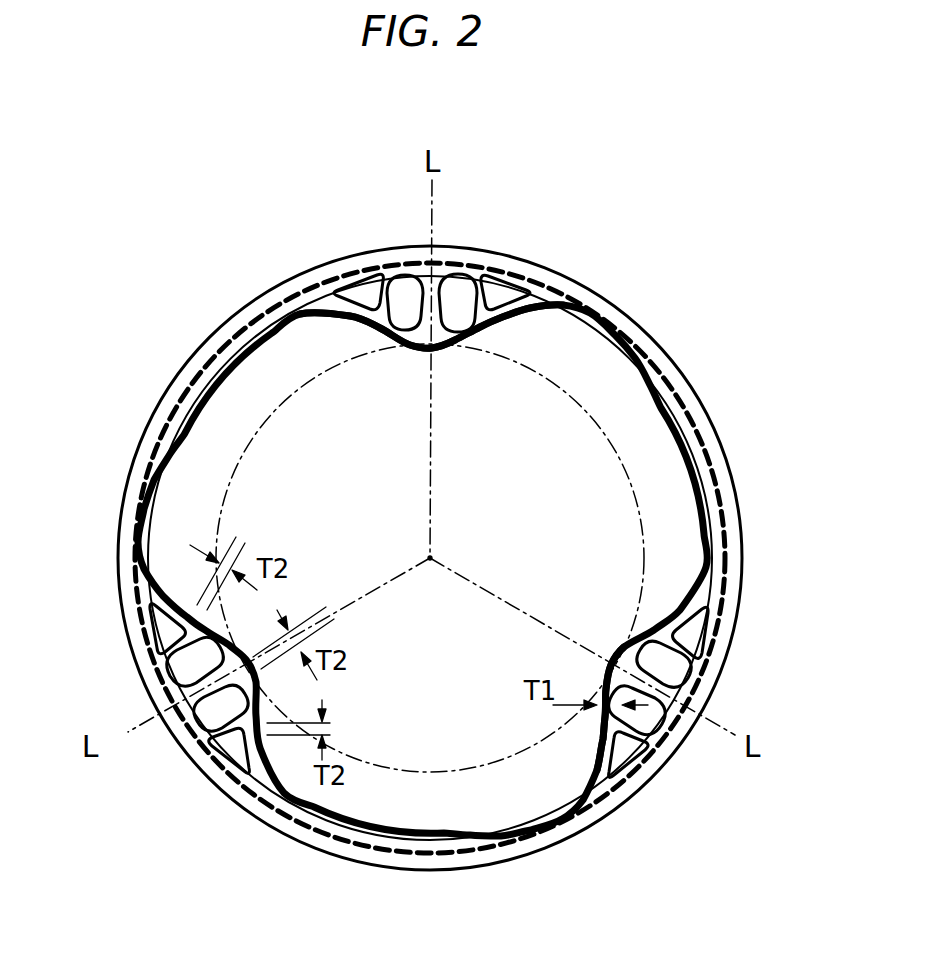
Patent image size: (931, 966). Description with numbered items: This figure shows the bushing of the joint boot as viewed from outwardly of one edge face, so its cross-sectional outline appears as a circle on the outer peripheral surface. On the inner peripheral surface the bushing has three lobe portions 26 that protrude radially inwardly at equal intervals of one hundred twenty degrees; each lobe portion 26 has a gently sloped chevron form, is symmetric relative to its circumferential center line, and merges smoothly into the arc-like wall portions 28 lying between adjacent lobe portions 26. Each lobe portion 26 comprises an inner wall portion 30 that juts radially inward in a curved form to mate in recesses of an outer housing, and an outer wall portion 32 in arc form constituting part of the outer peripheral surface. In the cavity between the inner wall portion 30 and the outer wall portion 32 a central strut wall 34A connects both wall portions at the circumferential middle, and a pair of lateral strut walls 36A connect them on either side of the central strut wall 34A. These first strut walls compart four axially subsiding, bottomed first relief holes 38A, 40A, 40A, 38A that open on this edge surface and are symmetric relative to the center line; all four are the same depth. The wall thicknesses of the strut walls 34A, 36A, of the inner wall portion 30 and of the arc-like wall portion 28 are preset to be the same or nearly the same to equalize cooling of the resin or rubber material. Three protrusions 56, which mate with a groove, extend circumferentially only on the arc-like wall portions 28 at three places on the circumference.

The lobe portion 26 is at (497, 347).
The arc-like wall portion 28 is at (685, 388).
The inner wall portion 30 is at (340, 367).
The outer wall portion 32 is at (405, 250).
The central strut wall 34A is at (443, 280).
The lateral strut wall 36A is at (385, 272).
The first bottomed relief hole 38A is at (363, 293).
The first bottomed relief hole 40A is at (410, 302).
The protrusion 56 is at (190, 436).